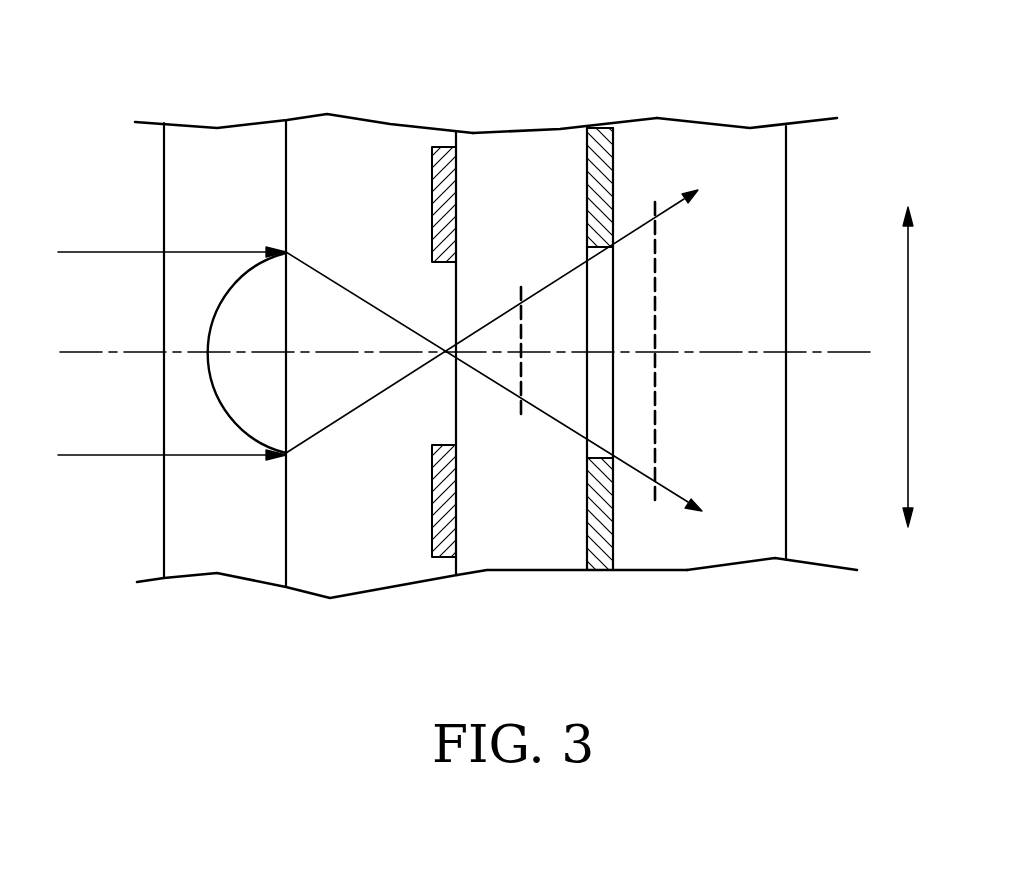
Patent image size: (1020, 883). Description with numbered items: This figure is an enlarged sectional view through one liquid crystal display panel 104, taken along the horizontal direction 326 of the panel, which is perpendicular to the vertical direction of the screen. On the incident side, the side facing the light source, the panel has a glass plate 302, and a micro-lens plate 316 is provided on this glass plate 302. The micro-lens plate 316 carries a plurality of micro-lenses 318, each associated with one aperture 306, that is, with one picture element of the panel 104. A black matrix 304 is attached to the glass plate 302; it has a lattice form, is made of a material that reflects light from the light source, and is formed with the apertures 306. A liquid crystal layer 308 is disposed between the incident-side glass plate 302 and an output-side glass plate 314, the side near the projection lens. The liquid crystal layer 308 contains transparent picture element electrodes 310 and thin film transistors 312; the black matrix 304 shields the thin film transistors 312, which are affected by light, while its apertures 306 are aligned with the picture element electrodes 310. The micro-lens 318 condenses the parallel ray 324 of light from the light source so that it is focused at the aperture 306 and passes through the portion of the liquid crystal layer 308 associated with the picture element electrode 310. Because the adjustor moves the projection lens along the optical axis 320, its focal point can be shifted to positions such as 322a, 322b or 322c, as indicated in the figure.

The liquid crystal display panel 104 is at (607, 88).
The glass plate 302 is at (378, 145).
The black matrix 304 is at (440, 553).
The apertures 306 is at (445, 403).
The liquid crystal layer 308 is at (482, 147).
The picture element electrodes 310 is at (597, 400).
The thin film transistors 312 is at (600, 560).
The glass plate 314 is at (715, 135).
The micro-lens plate 316 is at (248, 136).
The micro-lens 318 is at (235, 408).
The optical axis 320 is at (800, 350).
The focal point position 322a is at (446, 348).
The focal point position 322b is at (521, 287).
The focal point position 322c is at (658, 255).
The parallel ray 324 is at (137, 250).
The horizontal direction 326 is at (908, 405).